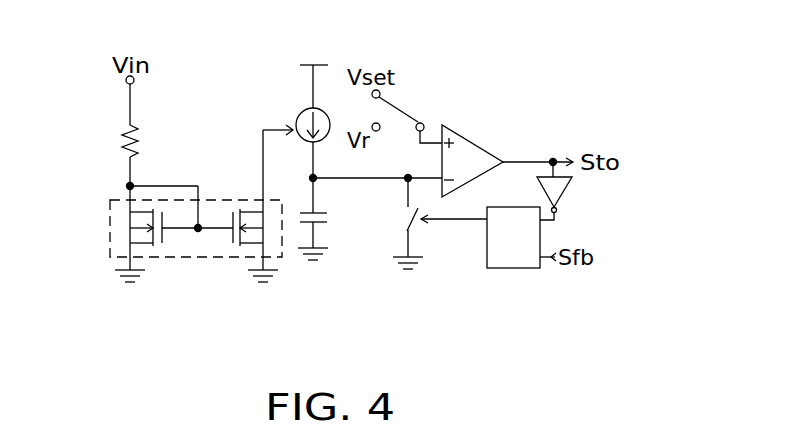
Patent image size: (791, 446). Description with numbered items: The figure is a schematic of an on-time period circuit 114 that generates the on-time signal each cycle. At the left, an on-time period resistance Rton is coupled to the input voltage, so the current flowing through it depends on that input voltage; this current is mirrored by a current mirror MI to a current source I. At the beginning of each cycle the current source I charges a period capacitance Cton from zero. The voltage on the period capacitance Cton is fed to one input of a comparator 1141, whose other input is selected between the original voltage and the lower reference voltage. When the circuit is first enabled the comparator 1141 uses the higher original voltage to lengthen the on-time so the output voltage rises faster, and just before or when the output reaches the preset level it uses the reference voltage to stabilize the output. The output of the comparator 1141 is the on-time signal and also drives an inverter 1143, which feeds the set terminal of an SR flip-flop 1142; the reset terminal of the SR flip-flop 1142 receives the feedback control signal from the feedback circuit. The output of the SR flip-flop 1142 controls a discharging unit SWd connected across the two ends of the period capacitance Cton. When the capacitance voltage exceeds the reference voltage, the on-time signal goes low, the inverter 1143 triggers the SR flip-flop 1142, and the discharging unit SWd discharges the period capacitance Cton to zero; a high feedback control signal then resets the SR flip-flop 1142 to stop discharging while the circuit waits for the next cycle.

The on-time period circuit 114 is at (567, 78).
The comparator 1141 is at (468, 147).
The SR flip-flop 1142 is at (515, 265).
The inverter 1143 is at (563, 184).
The on-time period resistance Rton is at (100, 141).
The current mirror MI is at (112, 221).
The current source I is at (310, 103).
The period capacitance Cton is at (340, 219).
The discharging unit SWd is at (417, 232).